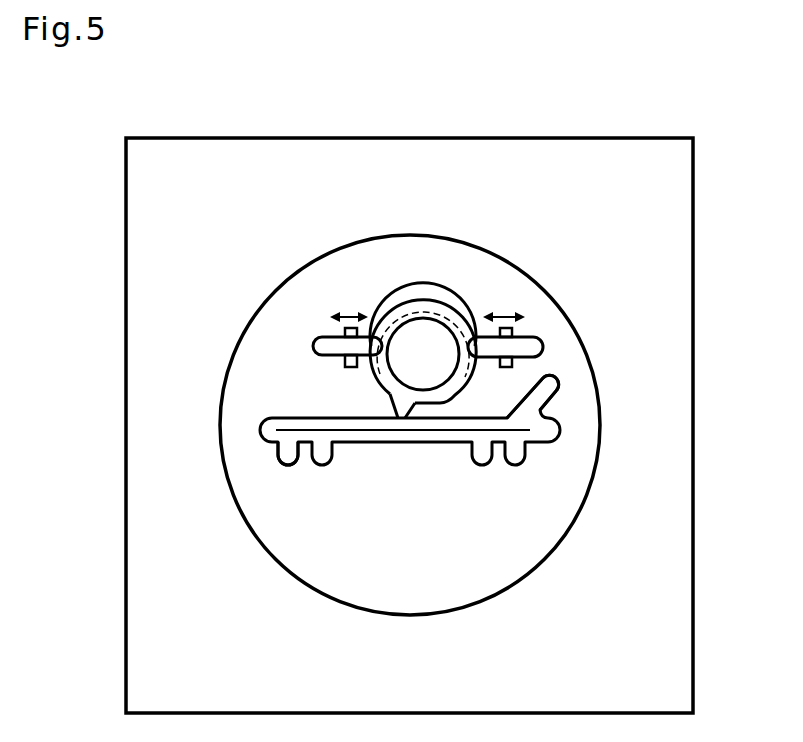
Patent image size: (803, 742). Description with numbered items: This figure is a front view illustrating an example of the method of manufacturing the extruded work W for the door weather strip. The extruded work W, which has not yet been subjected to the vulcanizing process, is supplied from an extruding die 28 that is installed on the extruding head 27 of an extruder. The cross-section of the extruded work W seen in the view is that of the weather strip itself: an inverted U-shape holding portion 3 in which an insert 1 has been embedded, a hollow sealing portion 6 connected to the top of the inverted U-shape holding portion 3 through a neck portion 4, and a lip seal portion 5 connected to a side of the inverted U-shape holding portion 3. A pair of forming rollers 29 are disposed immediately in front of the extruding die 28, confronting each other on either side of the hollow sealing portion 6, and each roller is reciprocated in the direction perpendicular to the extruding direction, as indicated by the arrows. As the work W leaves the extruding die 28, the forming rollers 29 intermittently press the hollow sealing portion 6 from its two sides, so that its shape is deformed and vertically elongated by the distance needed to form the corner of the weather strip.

The insert 1 is at (397, 432).
The inverted U-shape holding portion 3 is at (455, 445).
The neck portion 4 is at (406, 405).
The lip seal portion 5 is at (550, 386).
The hollow sealing portion 6 is at (448, 305).
The extruding head 27 is at (657, 420).
The extruding die 28 is at (567, 506).
The forming rollers 29 is at (333, 347).
The extruded work W is at (279, 452).